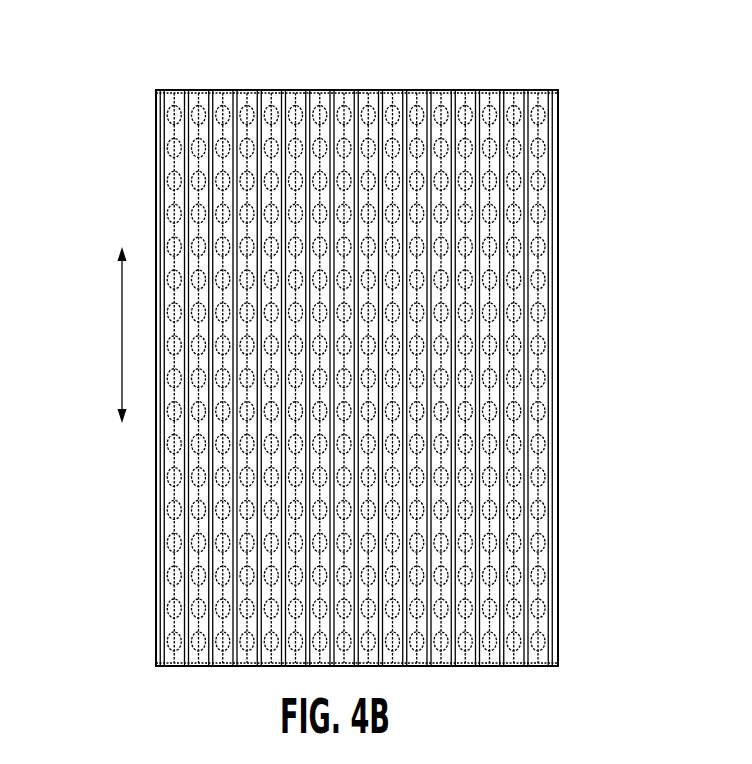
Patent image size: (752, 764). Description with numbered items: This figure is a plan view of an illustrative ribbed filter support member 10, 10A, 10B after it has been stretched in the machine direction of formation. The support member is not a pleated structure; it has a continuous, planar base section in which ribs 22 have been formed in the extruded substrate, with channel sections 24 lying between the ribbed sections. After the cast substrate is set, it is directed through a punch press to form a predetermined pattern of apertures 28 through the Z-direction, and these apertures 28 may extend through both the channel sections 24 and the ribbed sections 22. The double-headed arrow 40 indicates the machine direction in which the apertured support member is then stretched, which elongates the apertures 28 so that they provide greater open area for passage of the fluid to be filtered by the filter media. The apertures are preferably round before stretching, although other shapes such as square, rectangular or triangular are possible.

The ribbed filter support member 10 is at (419, 378).
The ribbed filter support member 10A is at (419, 378).
The ribbed filter support member 10B is at (572, 176).
The ribs 22 is at (415, 89).
The channel sections 24 is at (536, 96).
The apertures 28 is at (419, 109).
The double-headed arrow 40 is at (120, 337).